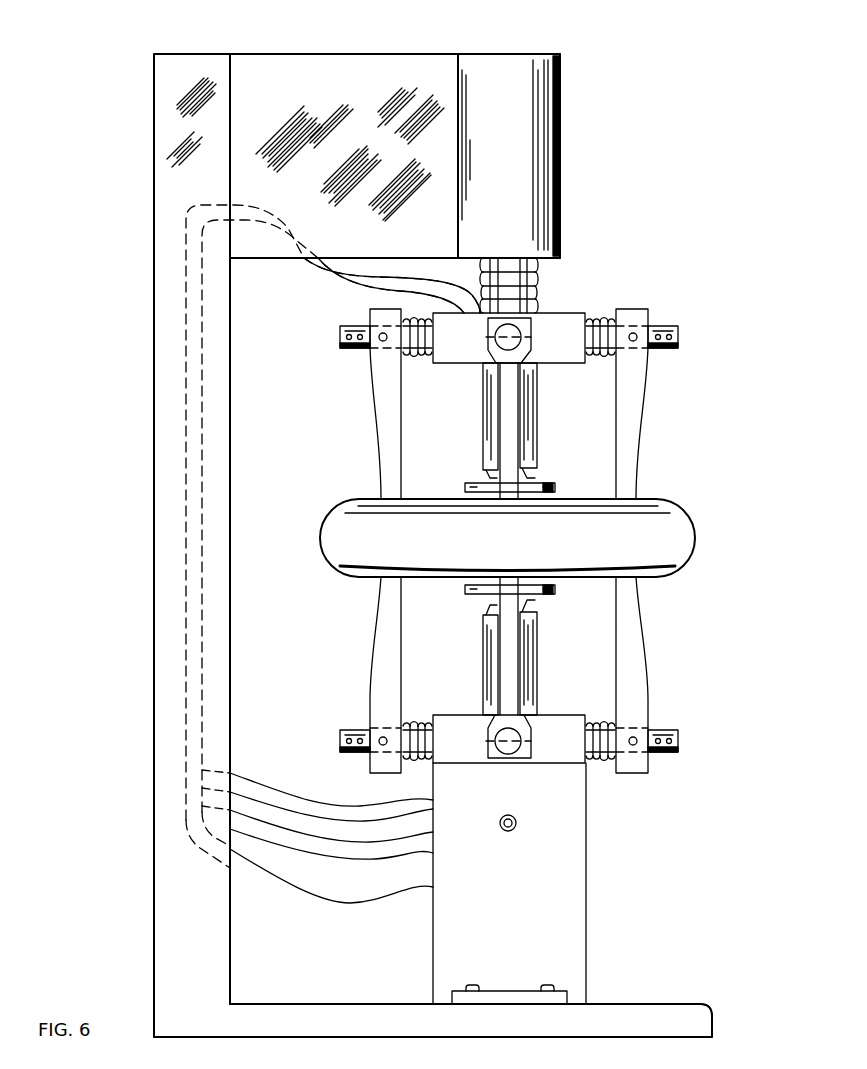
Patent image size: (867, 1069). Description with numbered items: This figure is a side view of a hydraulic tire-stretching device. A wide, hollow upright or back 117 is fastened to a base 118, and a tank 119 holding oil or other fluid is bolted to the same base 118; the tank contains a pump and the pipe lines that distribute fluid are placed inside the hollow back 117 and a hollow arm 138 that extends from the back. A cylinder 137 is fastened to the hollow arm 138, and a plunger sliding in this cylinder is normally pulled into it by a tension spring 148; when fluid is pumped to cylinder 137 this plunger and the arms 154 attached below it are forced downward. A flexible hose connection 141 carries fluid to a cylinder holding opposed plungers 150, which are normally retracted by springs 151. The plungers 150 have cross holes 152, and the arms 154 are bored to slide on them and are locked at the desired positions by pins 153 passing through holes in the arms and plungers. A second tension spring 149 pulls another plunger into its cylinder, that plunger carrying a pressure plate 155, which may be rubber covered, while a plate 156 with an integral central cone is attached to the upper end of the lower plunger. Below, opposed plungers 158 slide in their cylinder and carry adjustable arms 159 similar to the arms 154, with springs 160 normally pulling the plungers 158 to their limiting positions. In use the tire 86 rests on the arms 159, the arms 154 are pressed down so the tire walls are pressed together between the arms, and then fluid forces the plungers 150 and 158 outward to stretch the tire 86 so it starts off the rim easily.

The tire 86 is at (693, 519).
The upright or back 117 is at (154, 600).
The base 118 is at (708, 1003).
The tank 119 is at (586, 888).
The cylinder 137 is at (560, 150).
The hollow arm 138 is at (373, 54).
The flexible hose connection 141 is at (330, 274).
The tension spring 148 is at (540, 288).
The tension spring 149 is at (485, 472).
The plungers 150 is at (595, 358).
The springs 151 is at (606, 320).
The cross holes 152 is at (340, 334).
The pins 153 is at (380, 334).
The arms 154 is at (379, 427).
The pressure plate 155 is at (548, 485).
The plate 156 is at (547, 595).
The plungers 158 is at (415, 757).
The arms 159 is at (380, 641).
The springs 160 is at (406, 724).